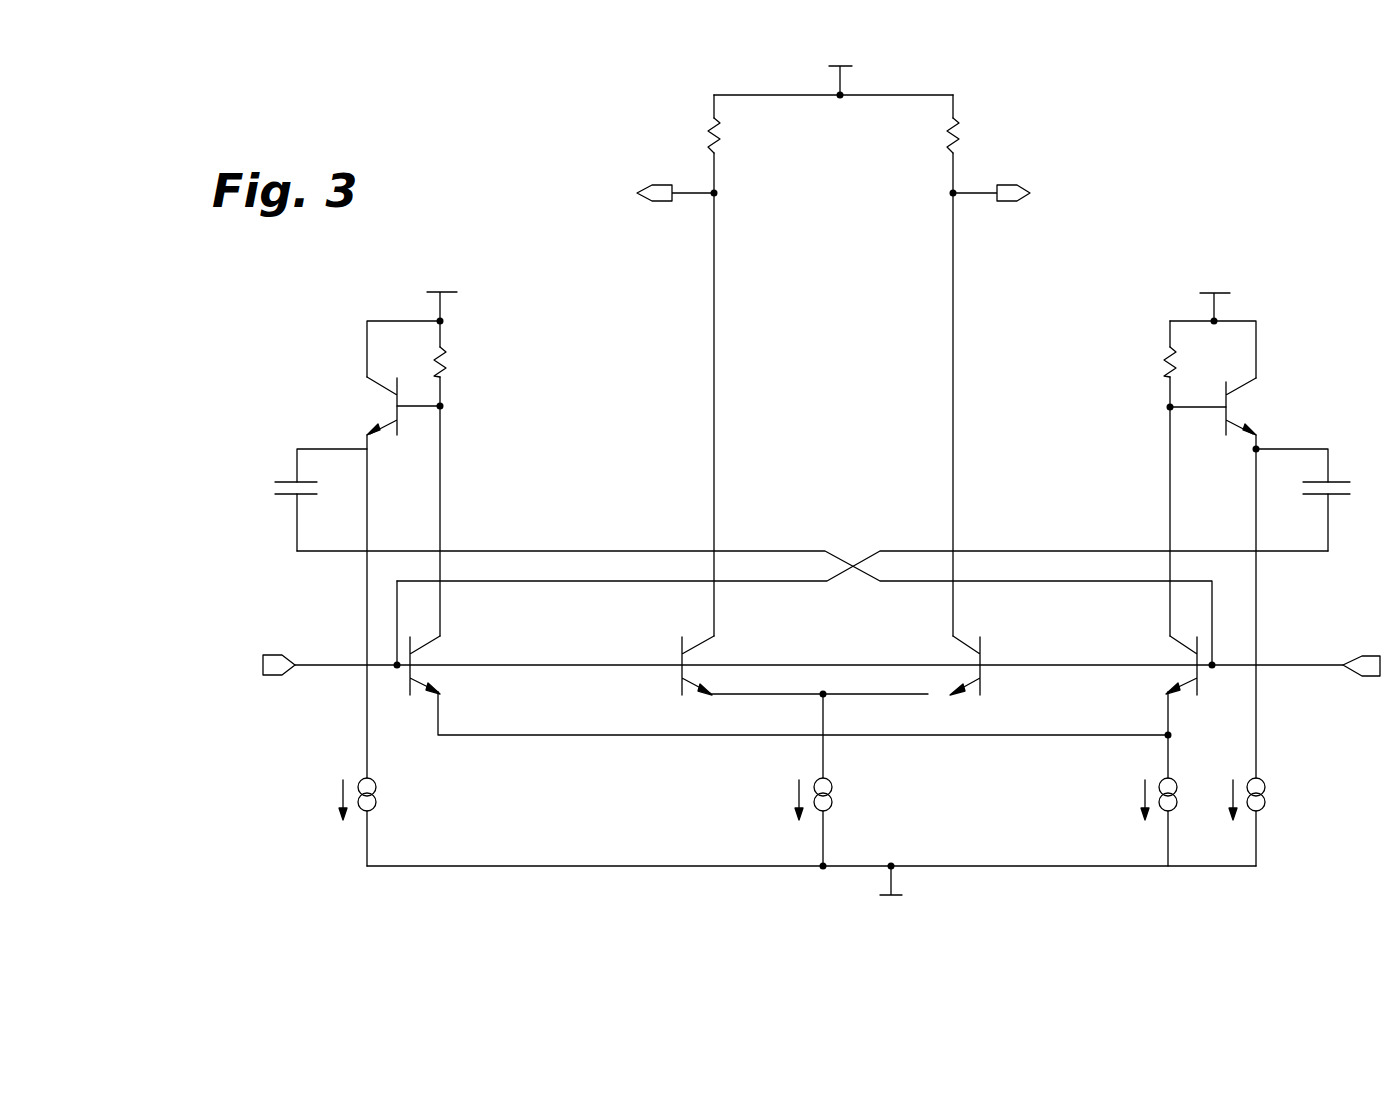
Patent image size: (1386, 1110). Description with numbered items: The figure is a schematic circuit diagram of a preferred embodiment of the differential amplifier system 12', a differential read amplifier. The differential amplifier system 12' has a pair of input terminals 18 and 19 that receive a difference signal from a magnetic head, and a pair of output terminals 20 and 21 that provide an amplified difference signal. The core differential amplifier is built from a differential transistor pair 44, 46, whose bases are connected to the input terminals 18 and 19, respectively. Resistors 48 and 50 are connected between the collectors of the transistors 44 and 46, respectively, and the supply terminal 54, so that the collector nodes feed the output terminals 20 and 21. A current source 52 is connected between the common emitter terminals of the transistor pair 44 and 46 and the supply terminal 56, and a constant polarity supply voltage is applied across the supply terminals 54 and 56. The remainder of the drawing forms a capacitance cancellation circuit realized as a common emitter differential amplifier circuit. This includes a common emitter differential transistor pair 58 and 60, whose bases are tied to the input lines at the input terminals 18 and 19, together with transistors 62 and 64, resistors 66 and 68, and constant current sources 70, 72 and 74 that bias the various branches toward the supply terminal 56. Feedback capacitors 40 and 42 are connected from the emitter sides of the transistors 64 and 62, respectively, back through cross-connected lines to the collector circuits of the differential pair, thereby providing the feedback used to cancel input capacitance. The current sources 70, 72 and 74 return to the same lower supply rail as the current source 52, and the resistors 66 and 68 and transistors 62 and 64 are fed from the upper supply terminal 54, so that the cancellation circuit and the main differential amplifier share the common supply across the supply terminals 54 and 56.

The differential amplifier system 12' is at (1243, 151).
The input terminal 18 is at (322, 664).
The input terminal 19 is at (1297, 669).
The output terminal 20 is at (690, 190).
The output terminal 21 is at (986, 188).
The feedback capacitor 40 is at (1332, 482).
The feedback capacitor 42 is at (286, 478).
The differential transistor 44 is at (680, 657).
The differential transistor 46 is at (982, 648).
The resistor 48 is at (712, 125).
The resistor 50 is at (958, 122).
The current source 52 is at (832, 789).
The supply terminal 54 is at (852, 66).
The supply terminal 56 is at (898, 882).
The common emitter differential transistor 58 is at (443, 636).
The common emitter differential transistor 60 is at (1168, 636).
The transistor 62 is at (366, 376).
The transistor 64 is at (1258, 378).
The resistor 66 is at (446, 364).
The resistor 68 is at (1168, 348).
The constant current source 70 is at (378, 788).
The constant current source 72 is at (1179, 793).
The constant current source 74 is at (1267, 793).